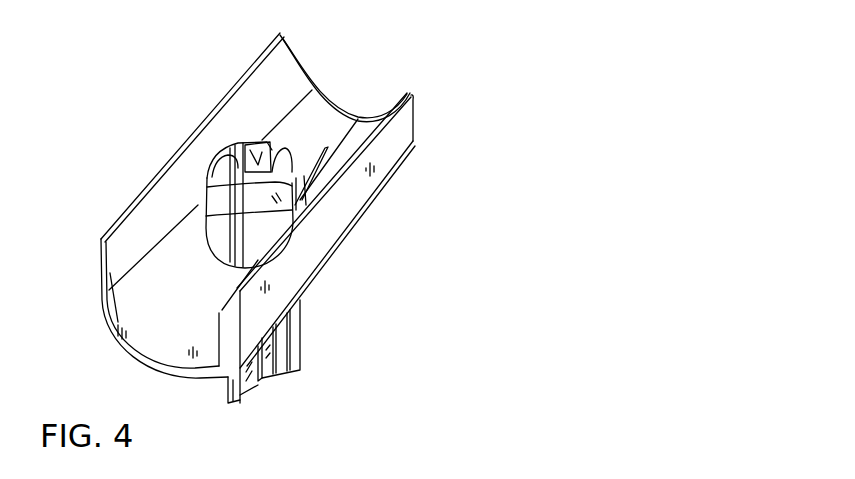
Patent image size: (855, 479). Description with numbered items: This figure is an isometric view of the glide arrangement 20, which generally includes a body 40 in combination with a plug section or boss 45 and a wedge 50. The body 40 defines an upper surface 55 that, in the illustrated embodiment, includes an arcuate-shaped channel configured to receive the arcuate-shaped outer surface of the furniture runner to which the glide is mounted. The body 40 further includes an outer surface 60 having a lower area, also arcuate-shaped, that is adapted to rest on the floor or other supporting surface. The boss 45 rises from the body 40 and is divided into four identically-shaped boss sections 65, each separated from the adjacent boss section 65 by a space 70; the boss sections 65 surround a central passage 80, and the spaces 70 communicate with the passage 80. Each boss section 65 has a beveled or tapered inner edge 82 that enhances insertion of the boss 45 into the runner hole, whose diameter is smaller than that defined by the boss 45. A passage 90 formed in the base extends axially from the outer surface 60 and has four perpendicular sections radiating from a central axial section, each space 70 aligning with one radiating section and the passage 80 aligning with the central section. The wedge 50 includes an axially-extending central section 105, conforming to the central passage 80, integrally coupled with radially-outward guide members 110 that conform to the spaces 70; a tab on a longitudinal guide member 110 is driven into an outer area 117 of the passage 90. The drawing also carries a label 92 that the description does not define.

The glide arrangement 20 is at (256, 235).
The body 40 is at (416, 118).
The boss 45 is at (197, 139).
The wedge 50 is at (303, 352).
The upper surface 55 is at (155, 278).
The outer surface 60 is at (197, 372).
The boss sections 65 is at (250, 150).
The space 70 is at (231, 144).
The central passage 80 is at (247, 146).
The tapered inner edge 82 is at (307, 172).
The passage 90 is at (206, 251).
The tab 92 is at (198, 188).
The central section 105 is at (270, 376).
The guide members 110 is at (236, 400).
The outer area 117 is at (223, 262).